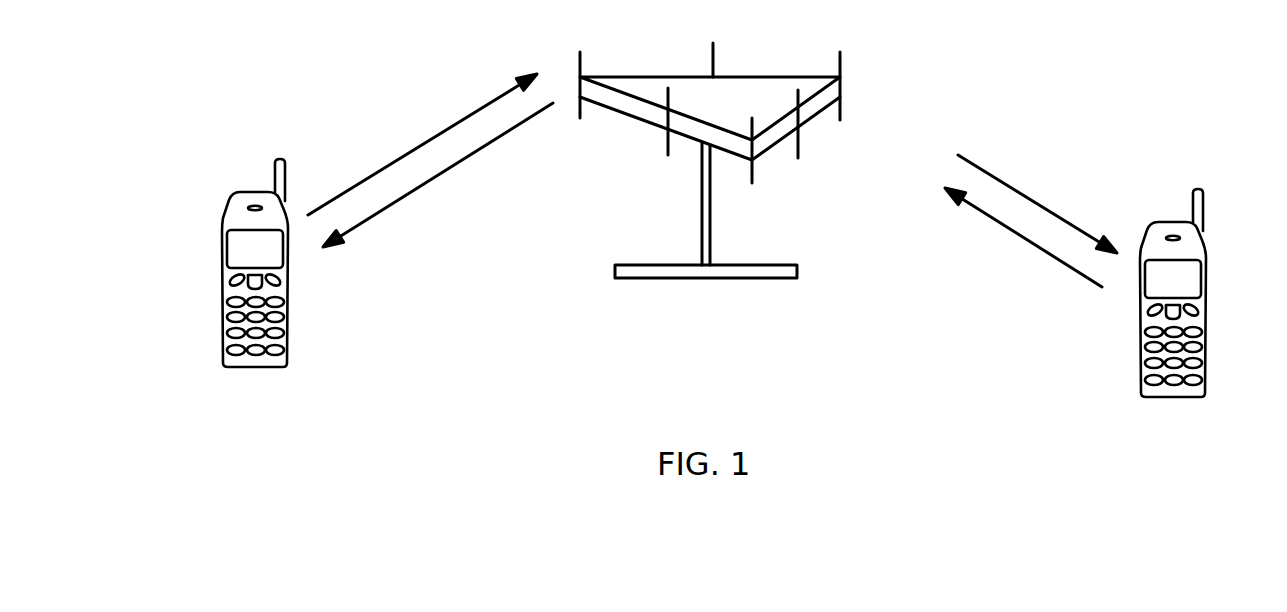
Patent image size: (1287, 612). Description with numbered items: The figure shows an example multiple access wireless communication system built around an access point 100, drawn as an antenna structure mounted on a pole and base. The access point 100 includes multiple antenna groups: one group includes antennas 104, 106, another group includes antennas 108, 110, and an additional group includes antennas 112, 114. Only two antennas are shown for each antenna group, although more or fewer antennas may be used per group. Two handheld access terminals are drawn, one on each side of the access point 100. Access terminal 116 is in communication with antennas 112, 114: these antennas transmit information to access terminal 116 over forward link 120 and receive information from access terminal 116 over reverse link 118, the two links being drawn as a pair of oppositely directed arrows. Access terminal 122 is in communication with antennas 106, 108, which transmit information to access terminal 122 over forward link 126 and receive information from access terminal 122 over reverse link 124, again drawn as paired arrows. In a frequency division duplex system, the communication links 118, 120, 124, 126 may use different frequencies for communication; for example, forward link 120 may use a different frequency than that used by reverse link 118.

The access point 100 is at (737, 278).
The antenna 104 is at (752, 183).
The antenna 106 is at (800, 148).
The antenna 108 is at (843, 110).
The antenna 110 is at (715, 57).
The antenna 112 is at (578, 60).
The antenna 114 is at (668, 152).
The access terminal 116 is at (222, 232).
The reverse link 118 is at (428, 140).
The forward link 120 is at (428, 182).
The access terminal 122 is at (1207, 270).
The reverse link 124 is at (1033, 247).
The forward link 126 is at (1028, 198).